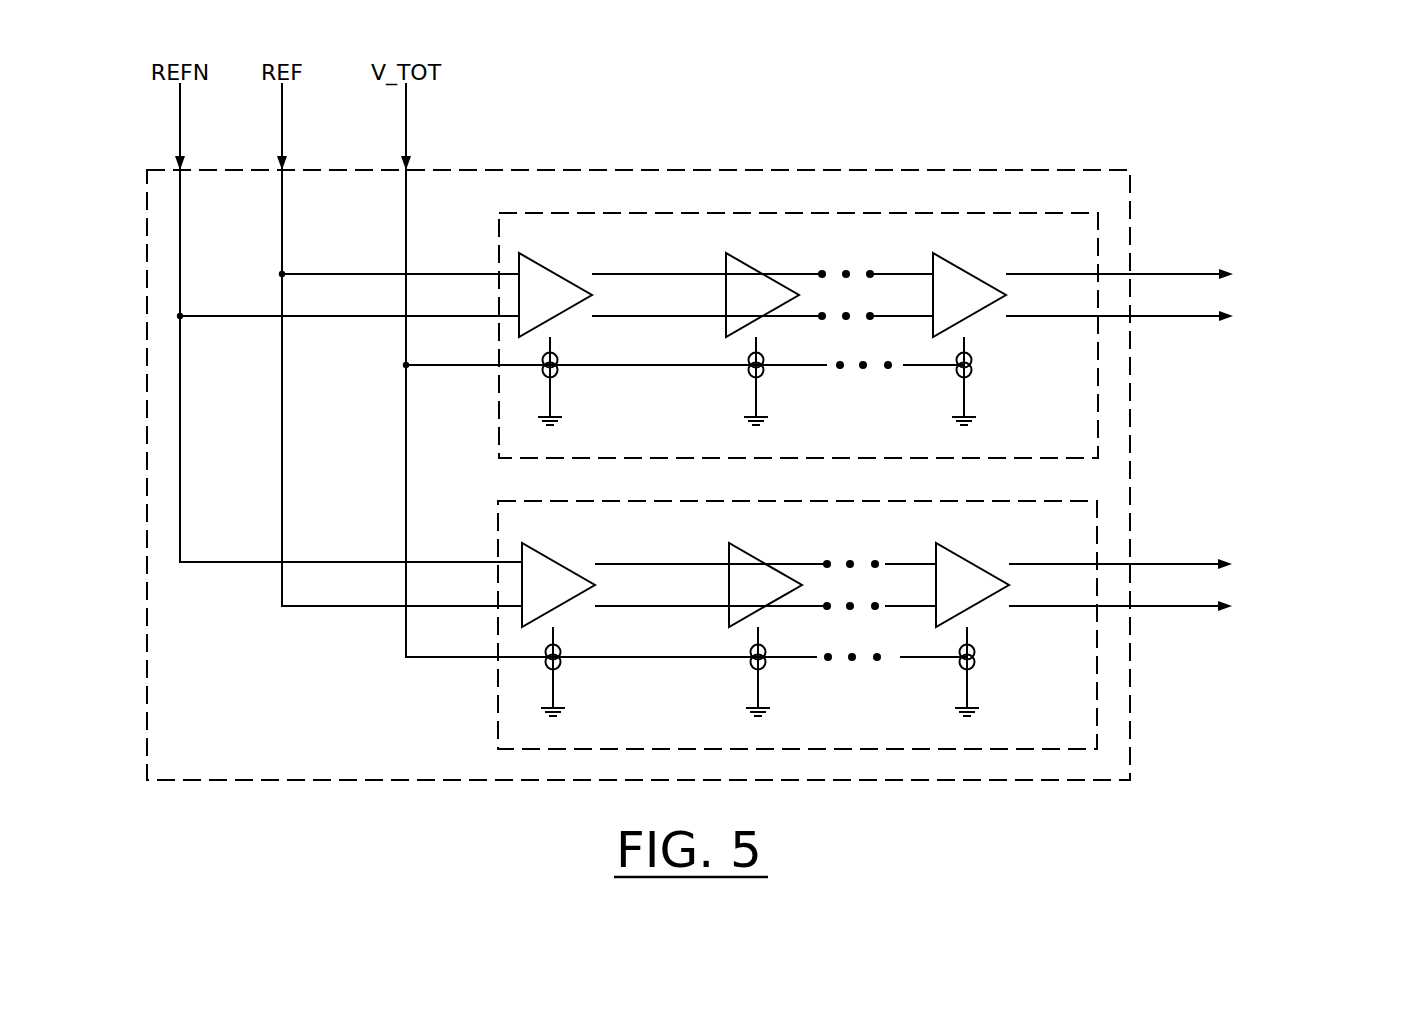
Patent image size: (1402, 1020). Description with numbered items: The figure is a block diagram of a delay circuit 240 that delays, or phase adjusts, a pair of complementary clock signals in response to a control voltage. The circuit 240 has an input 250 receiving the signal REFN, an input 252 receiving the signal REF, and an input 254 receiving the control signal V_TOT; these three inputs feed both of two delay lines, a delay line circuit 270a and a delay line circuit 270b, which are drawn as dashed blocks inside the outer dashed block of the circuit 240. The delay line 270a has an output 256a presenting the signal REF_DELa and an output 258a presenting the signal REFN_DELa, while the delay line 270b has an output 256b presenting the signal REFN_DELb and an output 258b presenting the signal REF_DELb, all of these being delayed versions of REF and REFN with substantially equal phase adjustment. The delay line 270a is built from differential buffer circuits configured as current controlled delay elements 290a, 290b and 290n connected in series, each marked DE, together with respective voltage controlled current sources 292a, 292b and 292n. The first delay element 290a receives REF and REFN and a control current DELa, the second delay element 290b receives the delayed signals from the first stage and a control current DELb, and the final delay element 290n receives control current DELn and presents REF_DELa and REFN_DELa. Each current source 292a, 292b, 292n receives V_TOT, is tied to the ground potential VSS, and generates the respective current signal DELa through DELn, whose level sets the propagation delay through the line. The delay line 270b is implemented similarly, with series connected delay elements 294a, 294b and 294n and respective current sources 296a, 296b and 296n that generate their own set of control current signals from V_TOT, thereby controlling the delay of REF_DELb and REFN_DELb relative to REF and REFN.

The delay circuit 240 is at (1132, 215).
The input 250 is at (183, 167).
The input 252 is at (285, 167).
The input 254 is at (408, 167).
The output 256a is at (1135, 274).
The output 258a is at (1135, 318).
The output 256b is at (1133, 564).
The output 258b is at (1133, 608).
The delay line circuit 270a is at (497, 422).
The delay line circuit 270b is at (496, 539).
The current controlled delay element 290a is at (540, 264).
The current controlled delay element 290b is at (745, 264).
The current controlled delay element 290n is at (953, 264).
The voltage controlled current source 292a is at (558, 376).
The voltage controlled current source 292b is at (764, 376).
The voltage controlled current source 292n is at (972, 376).
The current controlled delay element 294a is at (538, 549).
The current controlled delay element 294b is at (745, 549).
The current controlled delay element 294n is at (951, 549).
The voltage controlled current source 296a is at (560, 666).
The voltage controlled current source 296b is at (766, 666).
The voltage controlled current source 296n is at (976, 666).